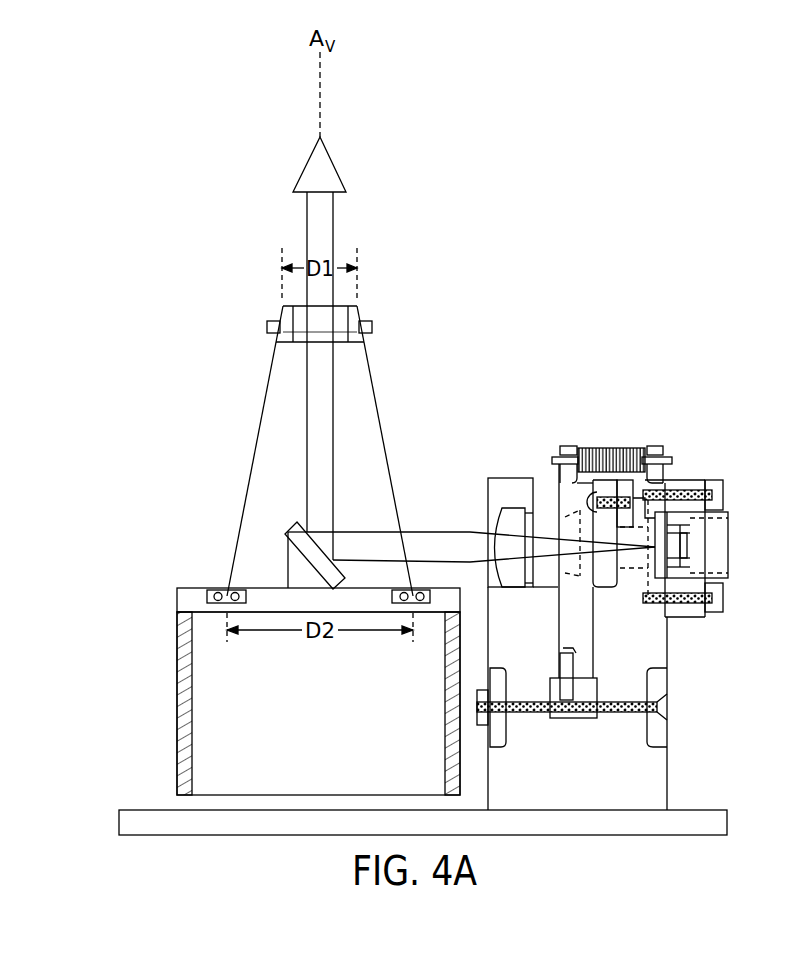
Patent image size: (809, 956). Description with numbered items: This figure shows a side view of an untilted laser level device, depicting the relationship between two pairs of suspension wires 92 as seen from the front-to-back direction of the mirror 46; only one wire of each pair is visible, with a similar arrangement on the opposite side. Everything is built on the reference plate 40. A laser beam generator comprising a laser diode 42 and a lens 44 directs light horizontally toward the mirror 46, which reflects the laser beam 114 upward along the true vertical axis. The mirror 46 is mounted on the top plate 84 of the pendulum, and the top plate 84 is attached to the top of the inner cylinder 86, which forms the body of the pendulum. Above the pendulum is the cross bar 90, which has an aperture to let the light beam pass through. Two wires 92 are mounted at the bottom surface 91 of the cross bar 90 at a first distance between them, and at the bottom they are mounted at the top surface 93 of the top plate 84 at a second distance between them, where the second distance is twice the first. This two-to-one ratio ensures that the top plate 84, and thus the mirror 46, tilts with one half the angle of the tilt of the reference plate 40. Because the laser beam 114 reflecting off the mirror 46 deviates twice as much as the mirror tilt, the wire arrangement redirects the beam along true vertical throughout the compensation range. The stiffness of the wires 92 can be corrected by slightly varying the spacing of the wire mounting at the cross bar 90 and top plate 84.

The laser beam 114 is at (330, 160).
The cross bar 90 is at (357, 307).
The bottom surface of cross bar 91 is at (350, 343).
The suspension wires 92 is at (254, 456).
The mirror 46 is at (300, 523).
The lens 44 is at (491, 520).
The top plate 84 is at (192, 588).
The top surface of top plate 93 is at (233, 590).
The inner cylinder 86 is at (177, 668).
The laser diode 42 is at (688, 541).
The reference plate 40 is at (612, 836).